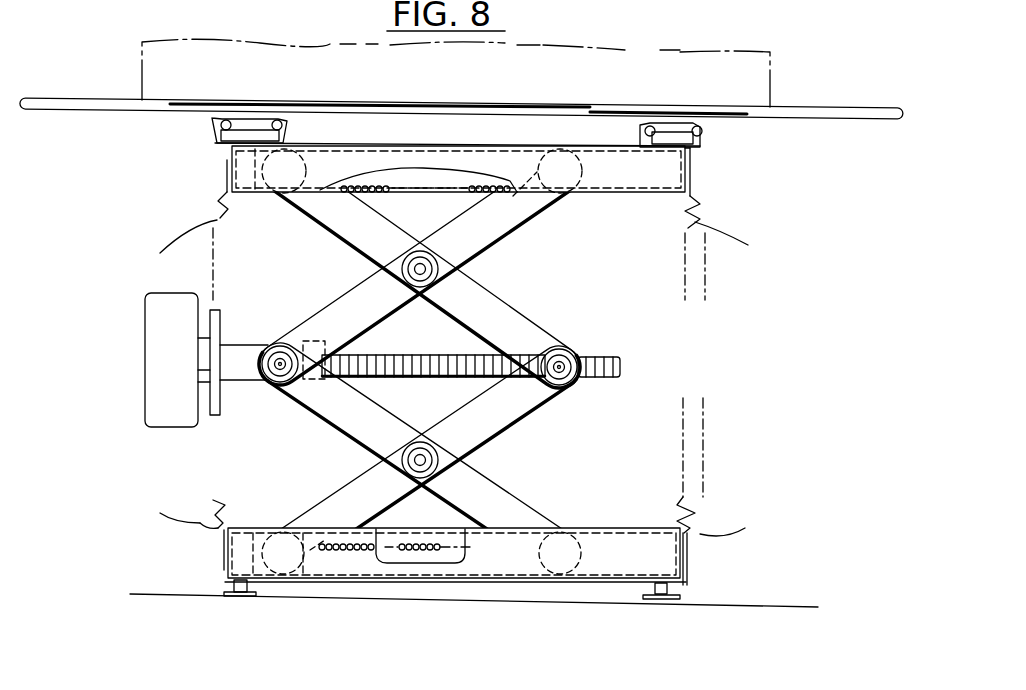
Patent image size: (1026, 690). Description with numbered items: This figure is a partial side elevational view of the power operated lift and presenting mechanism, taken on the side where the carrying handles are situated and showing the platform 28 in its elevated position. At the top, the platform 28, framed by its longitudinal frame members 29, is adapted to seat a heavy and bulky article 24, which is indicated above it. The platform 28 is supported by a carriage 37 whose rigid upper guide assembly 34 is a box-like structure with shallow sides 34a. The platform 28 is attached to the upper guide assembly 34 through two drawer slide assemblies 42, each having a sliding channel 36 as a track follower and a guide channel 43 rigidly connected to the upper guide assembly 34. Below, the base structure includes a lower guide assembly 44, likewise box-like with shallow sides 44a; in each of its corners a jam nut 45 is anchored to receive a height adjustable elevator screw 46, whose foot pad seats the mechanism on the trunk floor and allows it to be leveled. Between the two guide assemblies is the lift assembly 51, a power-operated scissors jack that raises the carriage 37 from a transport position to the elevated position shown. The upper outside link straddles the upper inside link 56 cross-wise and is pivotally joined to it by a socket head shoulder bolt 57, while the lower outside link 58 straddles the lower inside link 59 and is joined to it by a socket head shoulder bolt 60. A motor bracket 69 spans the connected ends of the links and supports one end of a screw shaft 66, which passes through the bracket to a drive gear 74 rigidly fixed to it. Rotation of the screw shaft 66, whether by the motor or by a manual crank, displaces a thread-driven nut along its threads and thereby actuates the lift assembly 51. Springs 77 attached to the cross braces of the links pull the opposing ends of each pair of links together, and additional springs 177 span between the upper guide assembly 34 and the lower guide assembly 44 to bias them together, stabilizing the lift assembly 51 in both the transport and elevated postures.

The heavy and bulky article 24 is at (760, 89).
The platform 28 is at (507, 93).
The longitudinal frame member 29 is at (350, 102).
The upper guide assembly 34 is at (216, 172).
The shallow side 34a is at (688, 170).
The sliding channel 36 is at (227, 120).
The carriage 37 is at (728, 182).
The drawer slide assembly 42 is at (203, 136).
The guide channel 43 is at (285, 143).
The lower guide assembly 44 is at (208, 570).
The shallow side 44a is at (690, 582).
The jam nut 45 is at (255, 585).
The elevator screw 46 is at (248, 600).
The lift assembly 51 is at (486, 362).
The upper inside link 56 is at (337, 225).
The socket head shoulder bolt 57 is at (463, 268).
The lower outside link 58 is at (470, 497).
The lower inside link 59 is at (517, 418).
The socket head shoulder bolt 60 is at (388, 463).
The screw shaft 66 is at (413, 377).
The motor bracket 69 is at (240, 372).
The drive gear 74 is at (155, 398).
The spring 77 is at (420, 191).
The spring 177 is at (456, 367).